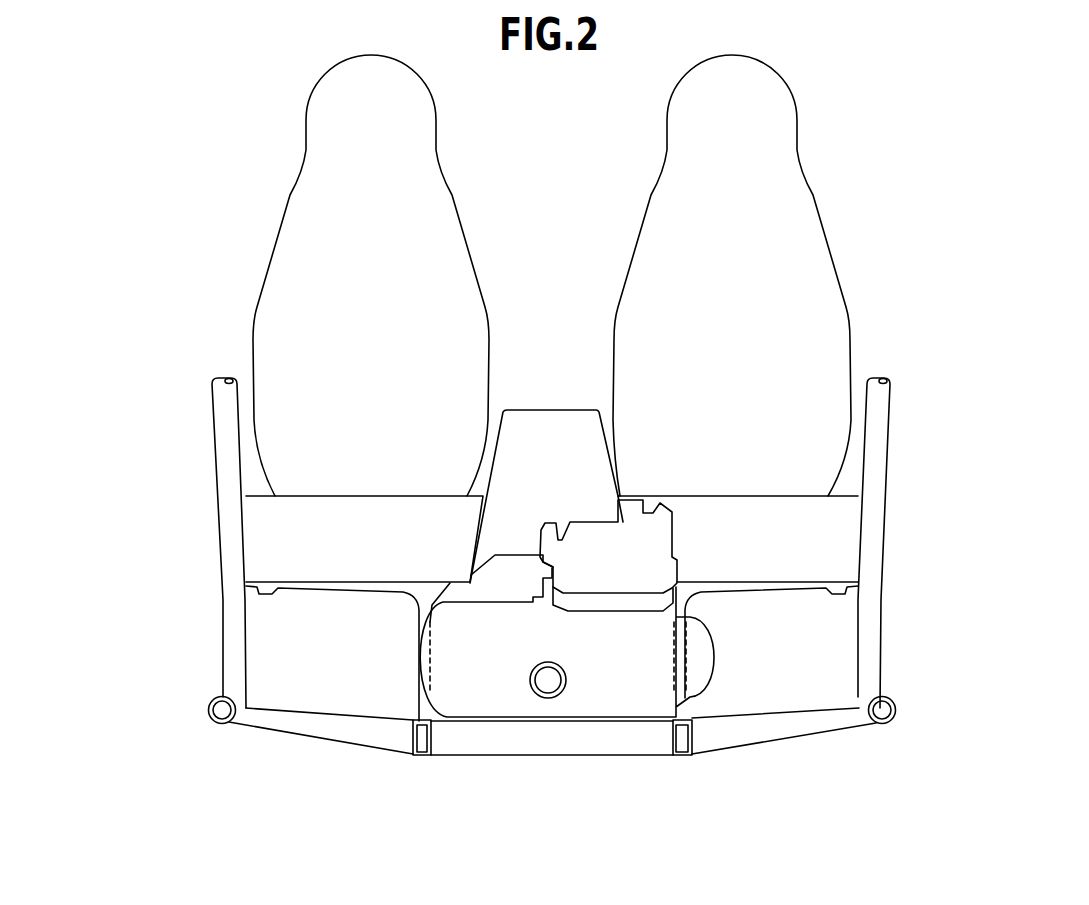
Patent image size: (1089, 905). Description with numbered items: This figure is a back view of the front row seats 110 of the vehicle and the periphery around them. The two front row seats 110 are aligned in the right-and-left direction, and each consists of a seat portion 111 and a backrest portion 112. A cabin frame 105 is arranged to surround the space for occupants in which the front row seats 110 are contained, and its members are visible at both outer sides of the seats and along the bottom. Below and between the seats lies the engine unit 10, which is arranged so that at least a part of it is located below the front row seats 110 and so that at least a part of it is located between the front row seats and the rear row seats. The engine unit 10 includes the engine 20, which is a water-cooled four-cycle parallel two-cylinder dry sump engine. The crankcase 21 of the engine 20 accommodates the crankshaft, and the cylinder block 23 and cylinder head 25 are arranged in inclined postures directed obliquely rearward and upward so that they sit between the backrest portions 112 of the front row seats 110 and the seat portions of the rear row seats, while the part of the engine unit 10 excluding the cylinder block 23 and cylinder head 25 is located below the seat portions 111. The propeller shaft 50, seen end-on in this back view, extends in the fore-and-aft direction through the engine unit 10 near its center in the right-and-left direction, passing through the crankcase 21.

The engine unit 10 is at (491, 680).
The engine 20 is at (622, 680).
The crankcase 21 is at (640, 690).
The cylinder block 23 is at (622, 602).
The cylinder head 25 is at (655, 535).
The propeller shaft 50 is at (551, 698).
The cabin frame 105 is at (232, 638).
The front row seats 110 is at (549, 318).
The seat portion 111 is at (278, 545).
The backrest portion 112 is at (290, 342).